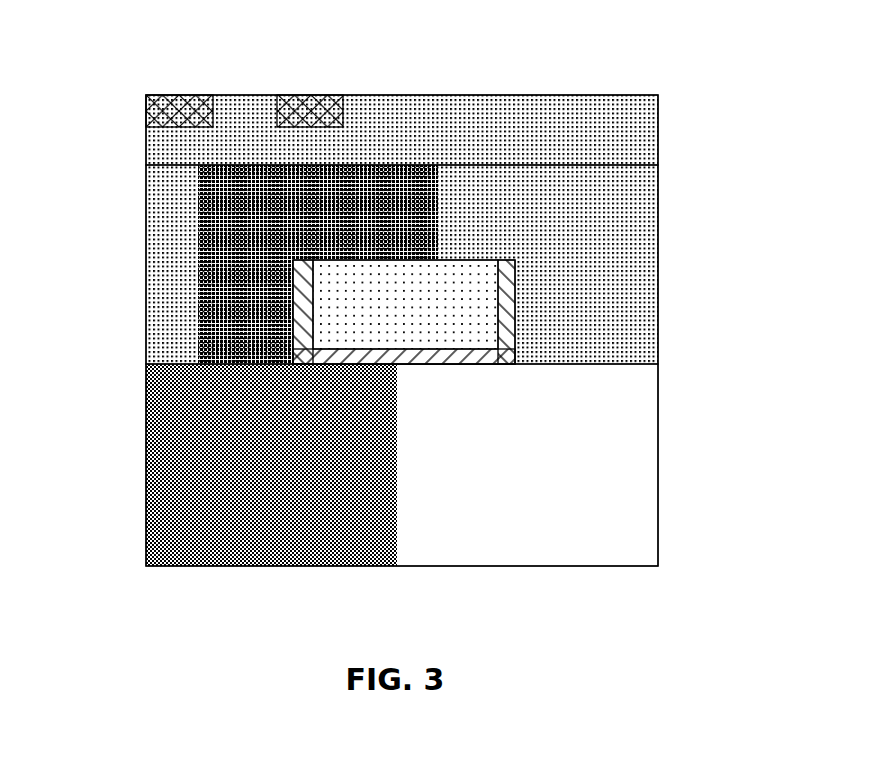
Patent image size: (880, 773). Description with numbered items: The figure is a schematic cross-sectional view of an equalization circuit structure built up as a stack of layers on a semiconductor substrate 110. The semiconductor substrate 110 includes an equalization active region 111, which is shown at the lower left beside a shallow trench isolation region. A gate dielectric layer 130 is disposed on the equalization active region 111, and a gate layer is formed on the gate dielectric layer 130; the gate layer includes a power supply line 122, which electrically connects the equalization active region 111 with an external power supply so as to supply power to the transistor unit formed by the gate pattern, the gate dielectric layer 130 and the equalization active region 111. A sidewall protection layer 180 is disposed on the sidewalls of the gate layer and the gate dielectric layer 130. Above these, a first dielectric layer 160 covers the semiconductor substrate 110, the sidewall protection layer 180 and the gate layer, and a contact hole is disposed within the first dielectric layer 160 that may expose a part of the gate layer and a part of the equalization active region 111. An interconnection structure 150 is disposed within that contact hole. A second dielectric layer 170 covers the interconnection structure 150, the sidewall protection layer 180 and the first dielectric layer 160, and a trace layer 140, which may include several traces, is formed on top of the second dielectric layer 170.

The semiconductor substrate 110 is at (658, 473).
The equalization active region 111 is at (282, 502).
The power supply line 122 is at (340, 305).
The gate dielectric layer 130 is at (426, 364).
The trace layer 140 is at (160, 120).
The interconnection structure 150 is at (220, 243).
The first dielectric layer 160 is at (613, 208).
The second dielectric layer 170 is at (523, 125).
The sidewall protection layer 180 is at (505, 323).